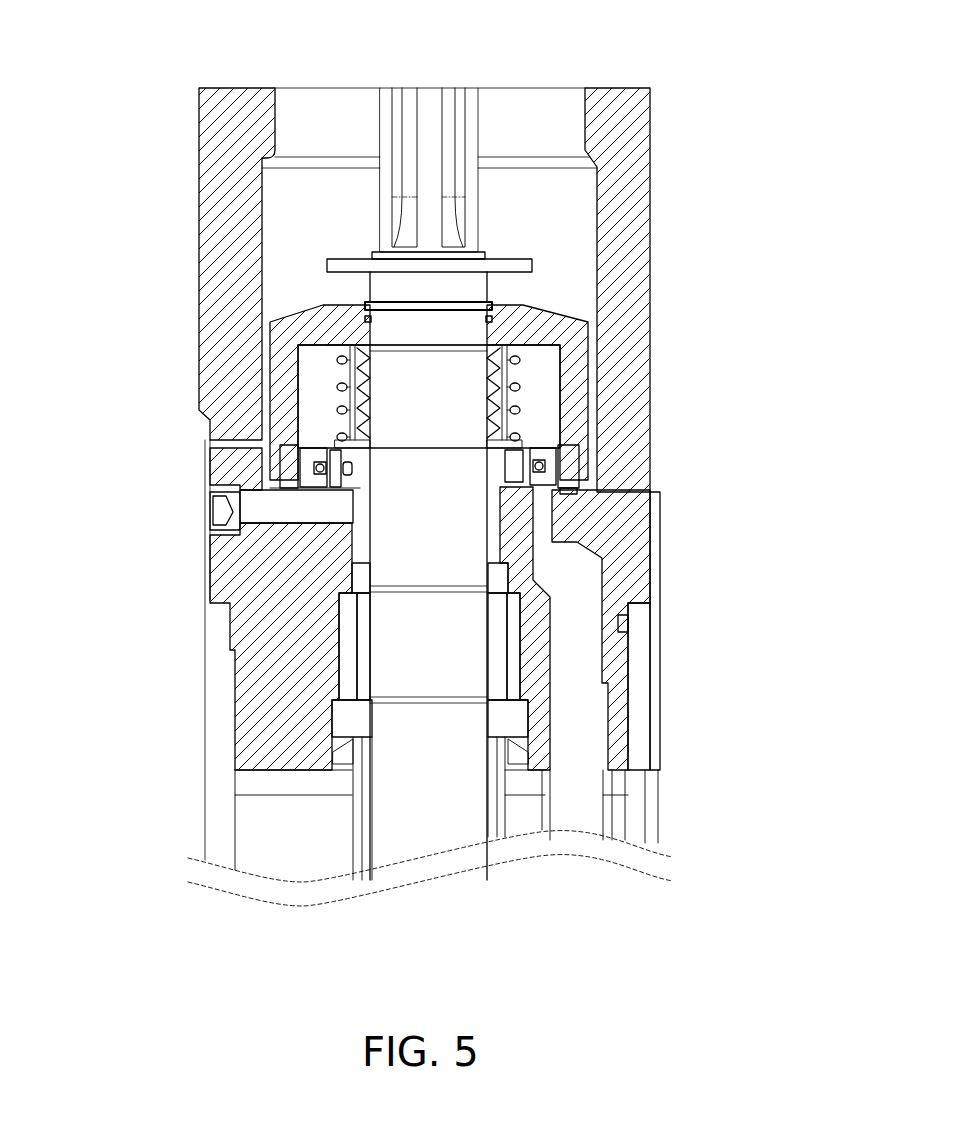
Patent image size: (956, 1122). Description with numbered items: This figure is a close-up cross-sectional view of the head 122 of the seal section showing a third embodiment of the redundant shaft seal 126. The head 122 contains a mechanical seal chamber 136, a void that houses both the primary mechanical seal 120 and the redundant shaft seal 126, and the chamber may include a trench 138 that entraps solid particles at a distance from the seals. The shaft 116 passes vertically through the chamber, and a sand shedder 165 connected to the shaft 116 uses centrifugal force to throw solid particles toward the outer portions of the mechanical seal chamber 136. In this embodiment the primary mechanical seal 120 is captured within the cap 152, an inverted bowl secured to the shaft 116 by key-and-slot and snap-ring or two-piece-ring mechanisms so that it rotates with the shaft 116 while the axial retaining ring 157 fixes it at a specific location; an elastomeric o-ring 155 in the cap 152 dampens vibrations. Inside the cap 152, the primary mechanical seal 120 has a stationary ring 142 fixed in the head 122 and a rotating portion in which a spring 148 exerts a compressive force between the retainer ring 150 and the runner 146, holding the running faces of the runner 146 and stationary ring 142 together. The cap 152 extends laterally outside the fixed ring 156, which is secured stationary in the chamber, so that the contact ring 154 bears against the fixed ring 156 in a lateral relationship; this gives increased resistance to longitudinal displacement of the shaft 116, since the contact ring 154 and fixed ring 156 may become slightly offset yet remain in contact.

The shaft 116 is at (432, 117).
The mechanical seal chamber 136 is at (533, 182).
The head 122 is at (712, 228).
The sand shedder 165 is at (387, 263).
The axial retaining ring 157 is at (370, 300).
The cap 152 is at (332, 353).
The elastomeric o-ring 155 is at (492, 307).
The retainer ring 150 is at (316, 308).
The redundant shaft seal 126 is at (575, 300).
The primary mechanical seal 120 is at (560, 397).
The spring 148 is at (343, 403).
The runner 146 is at (360, 437).
The trench 138 is at (343, 455).
The contact ring 154 is at (290, 477).
The fixed ring 156 is at (314, 475).
The stationary ring 142 is at (363, 470).